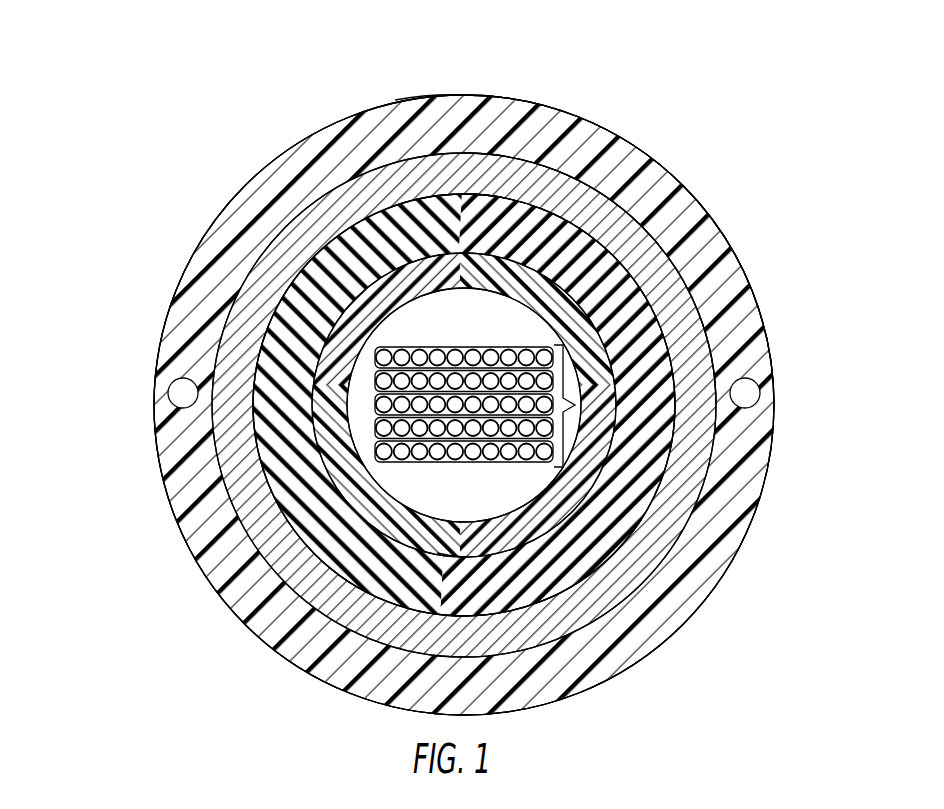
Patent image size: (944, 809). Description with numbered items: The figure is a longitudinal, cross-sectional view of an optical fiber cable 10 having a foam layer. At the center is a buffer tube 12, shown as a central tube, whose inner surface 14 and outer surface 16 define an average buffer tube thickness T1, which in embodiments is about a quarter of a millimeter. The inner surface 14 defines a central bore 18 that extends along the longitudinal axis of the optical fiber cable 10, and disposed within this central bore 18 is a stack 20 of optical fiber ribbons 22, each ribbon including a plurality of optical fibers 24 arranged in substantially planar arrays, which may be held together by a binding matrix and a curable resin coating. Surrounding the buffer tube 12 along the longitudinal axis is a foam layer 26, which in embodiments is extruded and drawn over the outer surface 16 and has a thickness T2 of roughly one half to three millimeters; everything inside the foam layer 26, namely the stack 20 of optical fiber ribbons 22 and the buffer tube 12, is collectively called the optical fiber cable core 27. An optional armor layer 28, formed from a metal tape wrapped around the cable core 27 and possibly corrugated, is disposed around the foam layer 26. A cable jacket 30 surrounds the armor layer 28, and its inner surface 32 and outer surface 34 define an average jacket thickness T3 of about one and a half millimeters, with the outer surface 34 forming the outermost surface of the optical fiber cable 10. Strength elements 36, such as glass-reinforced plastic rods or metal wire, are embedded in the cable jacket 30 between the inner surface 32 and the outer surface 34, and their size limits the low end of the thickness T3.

The optical fiber cable 10 is at (167, 172).
The buffer tube 12 is at (707, 217).
The inner surface 14 is at (400, 325).
The outer surface 16 is at (268, 565).
The central bore 18 is at (508, 325).
The stack 20 is at (593, 425).
The optical fiber ribbons 22 is at (457, 425).
The optical fibers 24 is at (473, 412).
The foam layer 26 is at (712, 330).
The optical fiber cable core 27 is at (595, 518).
The armor layer 28 is at (250, 515).
The cable jacket 30 is at (723, 553).
The inner surface 32 is at (272, 265).
The outer surface 34 is at (740, 263).
The strength elements 36 is at (180, 395).
The buffer tube thickness T1 is at (443, 488).
The foam layer thickness T2 is at (473, 192).
The jacket thickness T3 is at (392, 100).